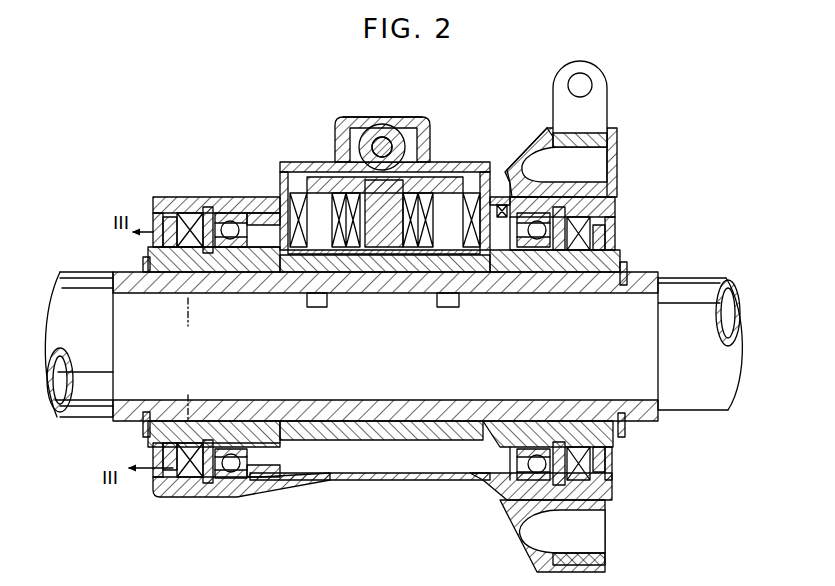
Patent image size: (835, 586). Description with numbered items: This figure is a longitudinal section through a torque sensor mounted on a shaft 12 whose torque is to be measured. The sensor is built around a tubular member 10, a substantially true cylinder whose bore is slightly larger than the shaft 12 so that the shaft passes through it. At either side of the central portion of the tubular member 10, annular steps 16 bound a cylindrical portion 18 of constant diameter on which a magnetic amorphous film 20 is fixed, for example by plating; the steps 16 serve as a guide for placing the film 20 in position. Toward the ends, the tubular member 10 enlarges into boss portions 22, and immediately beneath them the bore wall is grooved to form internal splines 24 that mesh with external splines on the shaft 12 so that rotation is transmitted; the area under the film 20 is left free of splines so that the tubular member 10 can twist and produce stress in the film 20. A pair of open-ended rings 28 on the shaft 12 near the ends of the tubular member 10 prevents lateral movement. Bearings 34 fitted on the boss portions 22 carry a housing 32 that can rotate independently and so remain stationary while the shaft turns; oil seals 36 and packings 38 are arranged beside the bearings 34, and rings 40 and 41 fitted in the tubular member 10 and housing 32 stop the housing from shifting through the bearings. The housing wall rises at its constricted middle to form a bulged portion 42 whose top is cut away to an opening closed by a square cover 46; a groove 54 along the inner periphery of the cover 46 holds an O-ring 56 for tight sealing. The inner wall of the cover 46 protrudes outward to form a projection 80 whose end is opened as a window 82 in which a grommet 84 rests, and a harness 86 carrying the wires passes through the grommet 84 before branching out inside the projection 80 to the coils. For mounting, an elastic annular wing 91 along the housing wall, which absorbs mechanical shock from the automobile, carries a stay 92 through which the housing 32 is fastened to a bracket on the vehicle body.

The tubular member 10 is at (617, 245).
The shaft 12 is at (680, 278).
The steps 16 is at (312, 297).
The cylindrical portion 18 is at (388, 292).
The magnetic amorphous film 20 is at (415, 294).
The boss portions 22 is at (232, 256).
The internal splines 24 is at (165, 274).
The rings 28 is at (145, 260).
The housing 32 is at (162, 196).
The bearings 34 is at (240, 249).
The oil seals 36 is at (190, 212).
The packings 38 is at (150, 273).
The rings 40 is at (212, 197).
The rings 41 is at (205, 254).
The bulged portion 42 is at (499, 203).
The cover 46 is at (279, 170).
The groove 54 is at (526, 185).
The O-ring 56 is at (503, 200).
The projection 80 is at (428, 138).
The window 82 is at (350, 140).
The grommet 84 is at (362, 118).
The harness 86 is at (372, 124).
The annular wing 91 is at (610, 150).
The stay 92 is at (600, 90).